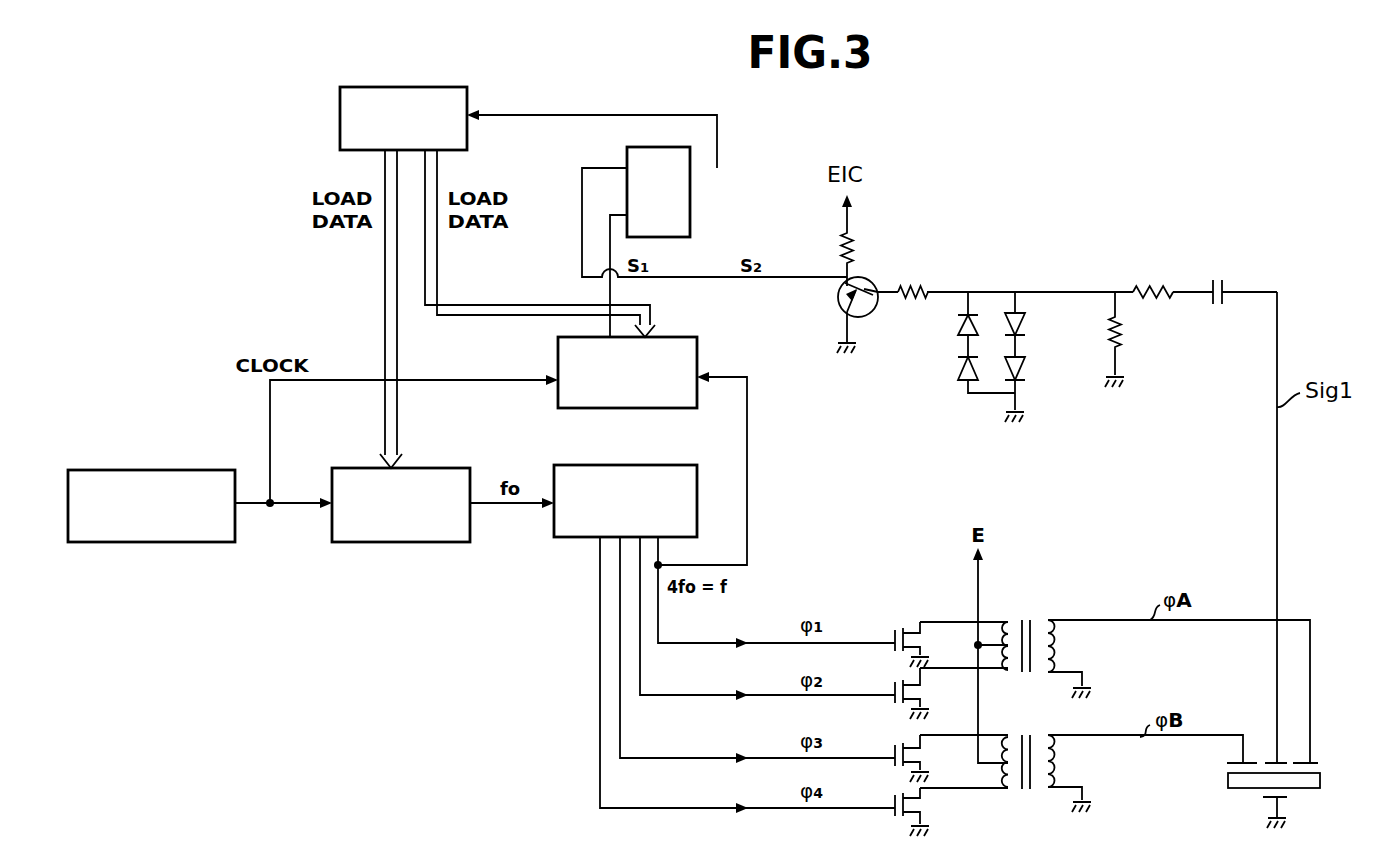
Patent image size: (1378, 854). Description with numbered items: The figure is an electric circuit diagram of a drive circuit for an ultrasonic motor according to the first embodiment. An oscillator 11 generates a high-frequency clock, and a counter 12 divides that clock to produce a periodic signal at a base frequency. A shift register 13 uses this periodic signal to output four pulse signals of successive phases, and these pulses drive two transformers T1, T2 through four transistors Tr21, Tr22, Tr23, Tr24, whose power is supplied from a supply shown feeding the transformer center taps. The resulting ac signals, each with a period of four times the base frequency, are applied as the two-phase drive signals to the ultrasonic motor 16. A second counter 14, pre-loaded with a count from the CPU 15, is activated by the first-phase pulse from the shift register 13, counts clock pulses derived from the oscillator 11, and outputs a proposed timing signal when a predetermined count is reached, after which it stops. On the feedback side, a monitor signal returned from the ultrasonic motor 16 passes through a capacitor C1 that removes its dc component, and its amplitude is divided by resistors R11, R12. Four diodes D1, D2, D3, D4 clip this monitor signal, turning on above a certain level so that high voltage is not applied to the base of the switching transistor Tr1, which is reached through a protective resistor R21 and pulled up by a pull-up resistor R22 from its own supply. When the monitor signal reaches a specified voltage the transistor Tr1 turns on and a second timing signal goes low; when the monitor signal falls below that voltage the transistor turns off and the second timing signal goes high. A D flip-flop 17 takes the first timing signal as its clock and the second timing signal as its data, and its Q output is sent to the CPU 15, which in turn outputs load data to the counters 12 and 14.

The oscillator 11 is at (180, 470).
The counter 12 is at (440, 468).
The shift register 13 is at (641, 465).
The counter 14 is at (698, 360).
The CPU 15 is at (385, 87).
The ultrasonic motor 16 is at (1228, 778).
The D flip-flop 17 is at (690, 205).
The switching transistor Tr1 is at (838, 302).
The transistor Tr21 is at (895, 630).
The transistor Tr22 is at (905, 690).
The transistor Tr23 is at (905, 761).
The transistor Tr24 is at (903, 822).
The resistor R11 is at (1150, 286).
The resistor R12 is at (1118, 333).
The protective resistor R21 is at (912, 288).
The pull-up resistor R22 is at (853, 247).
The capacitor C1 is at (1216, 279).
The diode D1 is at (1025, 318).
The diode D2 is at (1025, 364).
The diode D3 is at (958, 325).
The diode D4 is at (958, 368).
The transformer T1 is at (1030, 620).
The transformer T2 is at (1023, 792).